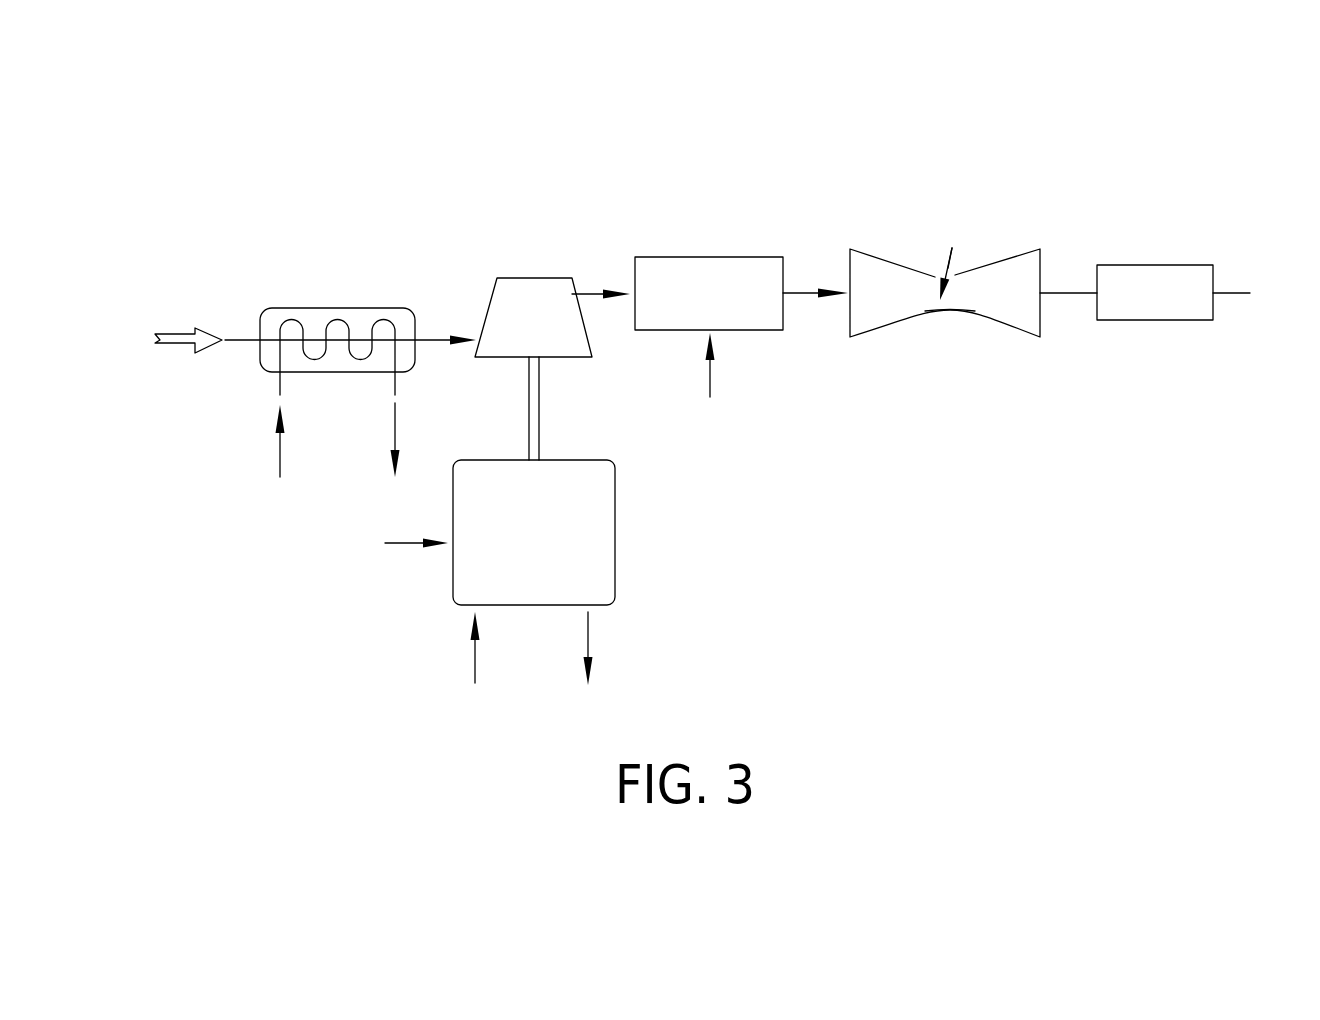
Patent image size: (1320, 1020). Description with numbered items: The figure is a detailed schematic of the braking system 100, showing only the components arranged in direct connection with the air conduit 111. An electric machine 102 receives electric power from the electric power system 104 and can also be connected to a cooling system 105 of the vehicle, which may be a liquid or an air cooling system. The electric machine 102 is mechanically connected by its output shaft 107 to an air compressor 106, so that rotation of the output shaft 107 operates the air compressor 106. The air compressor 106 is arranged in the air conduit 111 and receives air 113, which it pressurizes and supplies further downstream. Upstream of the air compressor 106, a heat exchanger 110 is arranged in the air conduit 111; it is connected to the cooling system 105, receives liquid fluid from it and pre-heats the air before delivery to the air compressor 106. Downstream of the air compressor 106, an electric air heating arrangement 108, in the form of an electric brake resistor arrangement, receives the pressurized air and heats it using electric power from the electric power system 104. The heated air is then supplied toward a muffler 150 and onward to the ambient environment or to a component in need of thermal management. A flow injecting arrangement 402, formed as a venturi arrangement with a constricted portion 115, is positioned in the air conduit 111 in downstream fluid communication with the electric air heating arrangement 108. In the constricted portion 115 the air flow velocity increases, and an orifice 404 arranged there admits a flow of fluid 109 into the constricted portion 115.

The braking system 100 is at (390, 141).
The electric machine 102 is at (530, 608).
The electric power system 104 is at (712, 376).
The cooling system 105 is at (280, 455).
The air compressor 106 is at (527, 278).
The output shaft 107 is at (540, 408).
The electric air heating arrangement 108 is at (713, 257).
The flow of fluid 109 is at (955, 258).
The heat exchanger 110 is at (345, 307).
The air conduit 111 is at (447, 300).
The air 113 is at (178, 332).
The constricted portion 115 is at (947, 313).
The muffler 150 is at (1187, 265).
The flow injecting arrangement 402 is at (1001, 256).
The orifice 404 is at (940, 276).